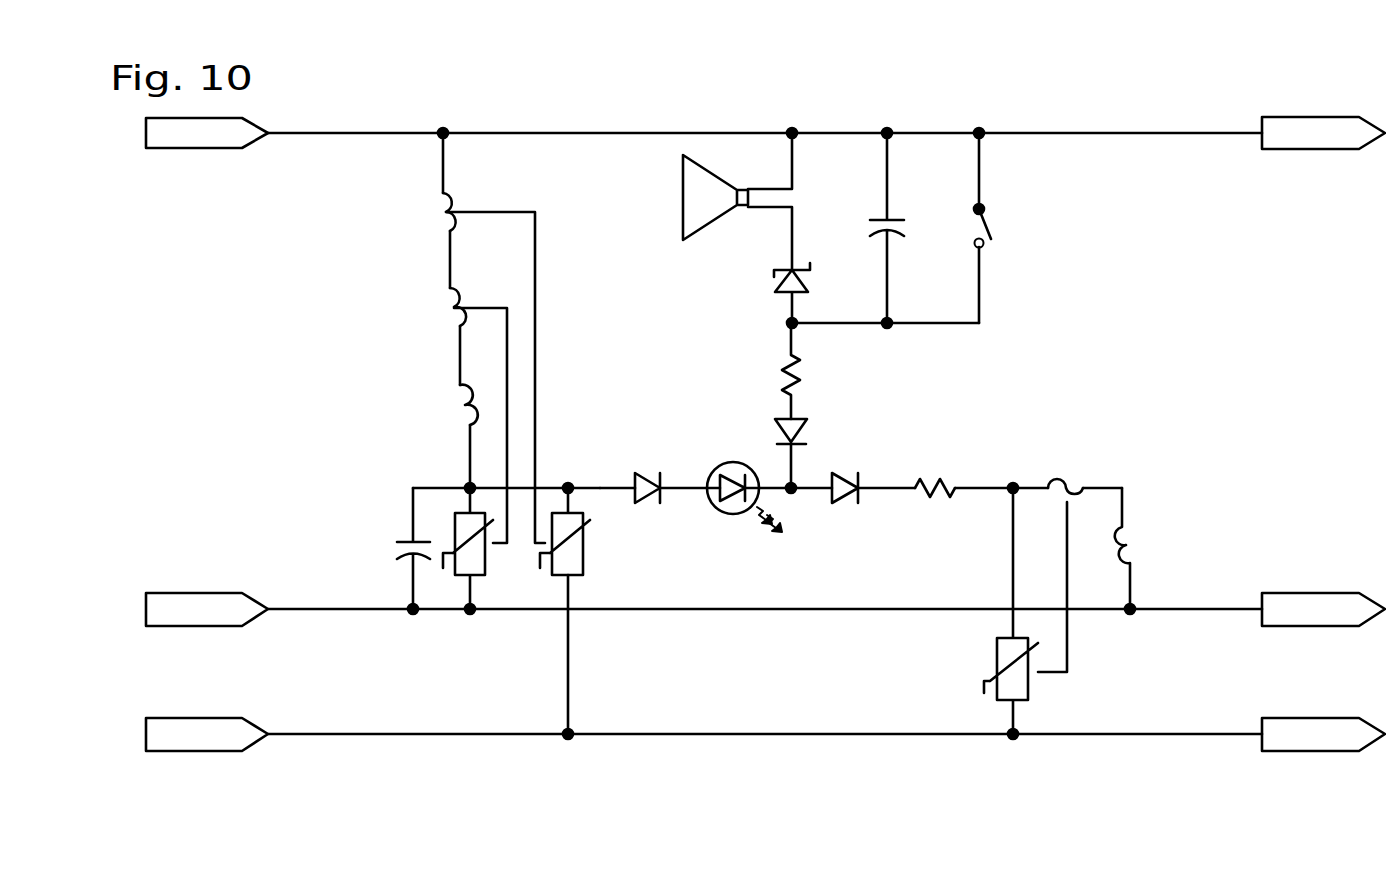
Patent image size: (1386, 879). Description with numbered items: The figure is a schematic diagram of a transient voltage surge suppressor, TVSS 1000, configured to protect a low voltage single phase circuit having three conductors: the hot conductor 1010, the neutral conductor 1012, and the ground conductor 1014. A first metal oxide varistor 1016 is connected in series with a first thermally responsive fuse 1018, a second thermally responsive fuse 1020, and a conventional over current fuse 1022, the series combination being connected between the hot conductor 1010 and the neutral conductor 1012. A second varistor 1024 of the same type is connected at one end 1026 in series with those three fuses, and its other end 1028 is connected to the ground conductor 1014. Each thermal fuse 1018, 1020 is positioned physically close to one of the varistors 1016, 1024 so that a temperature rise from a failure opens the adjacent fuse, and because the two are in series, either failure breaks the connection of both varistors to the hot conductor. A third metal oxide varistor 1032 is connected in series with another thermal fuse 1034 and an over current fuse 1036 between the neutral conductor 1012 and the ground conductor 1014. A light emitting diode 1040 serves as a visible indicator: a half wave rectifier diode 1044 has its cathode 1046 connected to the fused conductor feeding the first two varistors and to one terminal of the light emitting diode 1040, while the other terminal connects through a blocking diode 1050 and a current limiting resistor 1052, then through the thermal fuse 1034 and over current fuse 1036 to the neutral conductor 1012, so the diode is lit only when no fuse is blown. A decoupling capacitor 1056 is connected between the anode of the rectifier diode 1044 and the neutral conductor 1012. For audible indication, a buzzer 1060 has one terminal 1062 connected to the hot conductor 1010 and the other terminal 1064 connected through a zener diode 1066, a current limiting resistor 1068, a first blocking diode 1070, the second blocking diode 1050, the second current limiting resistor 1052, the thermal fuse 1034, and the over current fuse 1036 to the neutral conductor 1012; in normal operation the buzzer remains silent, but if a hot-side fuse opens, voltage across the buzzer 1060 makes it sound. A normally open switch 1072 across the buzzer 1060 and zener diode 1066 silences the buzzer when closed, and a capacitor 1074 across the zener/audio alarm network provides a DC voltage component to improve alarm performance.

The transient voltage surge suppressor 1000 is at (869, 58).
The hot conductor 1010 is at (333, 133).
The neutral conductor 1012 is at (372, 609).
The ground conductor 1014 is at (370, 734).
The first metal oxide varistor 1016 is at (485, 558).
The first thermally responsive fuse 1018 is at (450, 313).
The second thermally responsive fuse 1020 is at (440, 215).
The over current fuse 1022 is at (458, 410).
The second varistor 1024 is at (583, 558).
The one end of second varistor 1026 is at (568, 486).
The other end of second varistor 1028 is at (568, 740).
The third metal oxide varistor 1032 is at (997, 655).
The thermal fuse 1034 is at (1055, 478).
The over current fuse 1036 is at (1134, 540).
The light emitting diode 1040 is at (735, 514).
The half wave rectifier diode 1044 is at (643, 505).
The cathode 1046 is at (612, 486).
The blocking diode 1050 is at (838, 473).
The current limiting resistor 1052 is at (943, 477).
The decoupling capacitor 1056 is at (400, 540).
The buzzer 1060 is at (683, 222).
The terminal 1062 is at (827, 160).
The other terminal 1064 is at (827, 220).
The zener diode 1066 is at (775, 290).
The current limiting resistor 1068 is at (780, 368).
The first blocking diode 1070 is at (810, 420).
The normally open switch 1072 is at (993, 228).
The capacitor 1074 is at (895, 234).